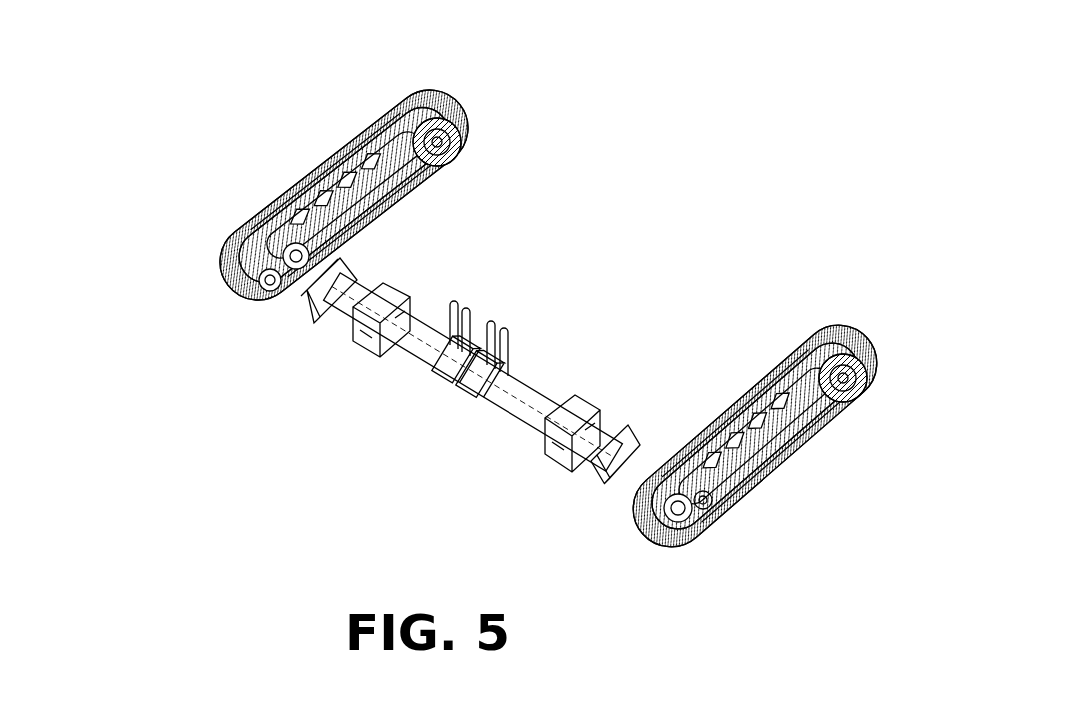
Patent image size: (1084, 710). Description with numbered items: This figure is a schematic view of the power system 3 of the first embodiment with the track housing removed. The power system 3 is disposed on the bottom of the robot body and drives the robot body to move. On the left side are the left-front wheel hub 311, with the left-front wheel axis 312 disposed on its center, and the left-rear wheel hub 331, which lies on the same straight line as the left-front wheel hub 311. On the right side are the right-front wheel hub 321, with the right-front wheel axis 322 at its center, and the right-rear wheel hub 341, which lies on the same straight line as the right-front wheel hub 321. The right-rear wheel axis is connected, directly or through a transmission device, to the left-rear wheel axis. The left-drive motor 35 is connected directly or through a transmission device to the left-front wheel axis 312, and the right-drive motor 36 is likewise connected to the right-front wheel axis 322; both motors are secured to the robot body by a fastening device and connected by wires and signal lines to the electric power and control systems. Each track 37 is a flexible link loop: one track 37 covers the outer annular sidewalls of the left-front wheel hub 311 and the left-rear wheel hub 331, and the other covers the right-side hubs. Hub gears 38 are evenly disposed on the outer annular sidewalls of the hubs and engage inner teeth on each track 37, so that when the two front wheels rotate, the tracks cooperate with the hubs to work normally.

The power system 3 is at (61, 100).
The left-front wheel hub 311 is at (685, 517).
The left-front wheel axis 312 is at (705, 510).
The right-front wheel hub 321 is at (290, 262).
The right-front wheel axis 322 is at (274, 288).
The left-rear wheel hub 331 is at (840, 405).
The right-rear wheel hub 341 is at (449, 137).
The left-drive motor 35 is at (575, 460).
The right-drive motor 36 is at (340, 315).
The track 37 is at (236, 242).
The hub gear 38 is at (380, 172).